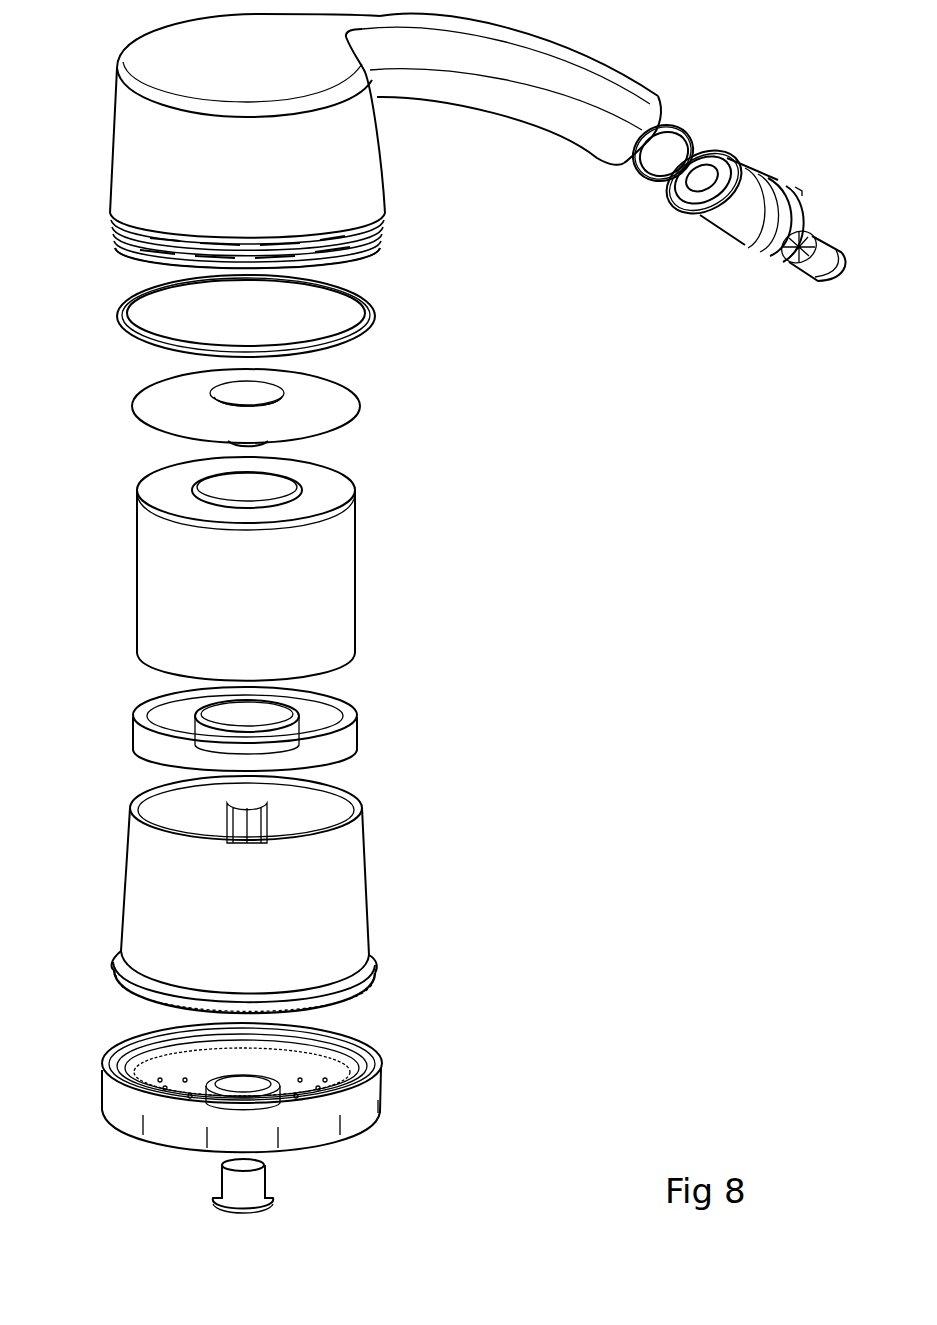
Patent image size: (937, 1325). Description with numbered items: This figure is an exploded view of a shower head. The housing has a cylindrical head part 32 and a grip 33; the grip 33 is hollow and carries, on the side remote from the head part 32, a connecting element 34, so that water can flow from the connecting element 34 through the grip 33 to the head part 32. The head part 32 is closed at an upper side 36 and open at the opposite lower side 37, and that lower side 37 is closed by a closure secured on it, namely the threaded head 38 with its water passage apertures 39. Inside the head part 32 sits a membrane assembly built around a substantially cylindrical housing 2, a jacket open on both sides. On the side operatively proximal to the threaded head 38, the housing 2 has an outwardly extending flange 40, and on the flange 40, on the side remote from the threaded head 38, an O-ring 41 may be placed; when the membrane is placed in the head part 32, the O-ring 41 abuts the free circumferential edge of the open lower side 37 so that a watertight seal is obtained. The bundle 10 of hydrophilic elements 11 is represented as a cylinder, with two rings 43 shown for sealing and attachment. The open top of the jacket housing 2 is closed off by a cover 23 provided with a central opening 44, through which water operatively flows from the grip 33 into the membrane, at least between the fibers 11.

The upper side 36 is at (200, 50).
The grip 33 is at (614, 88).
The connecting element 34 is at (750, 185).
The head part 32 is at (403, 227).
The lower side 37 is at (366, 257).
The O-ring 41 is at (352, 333).
The cover 23 is at (340, 405).
The central opening 44 is at (248, 400).
The hydrophilic elements 11 is at (163, 498).
The bundle 10 is at (337, 625).
The rings 43 is at (335, 750).
The housing 2 is at (335, 890).
The flange 40 is at (117, 958).
The water passage apertures 39 is at (342, 1003).
The threaded head 38 is at (358, 1118).